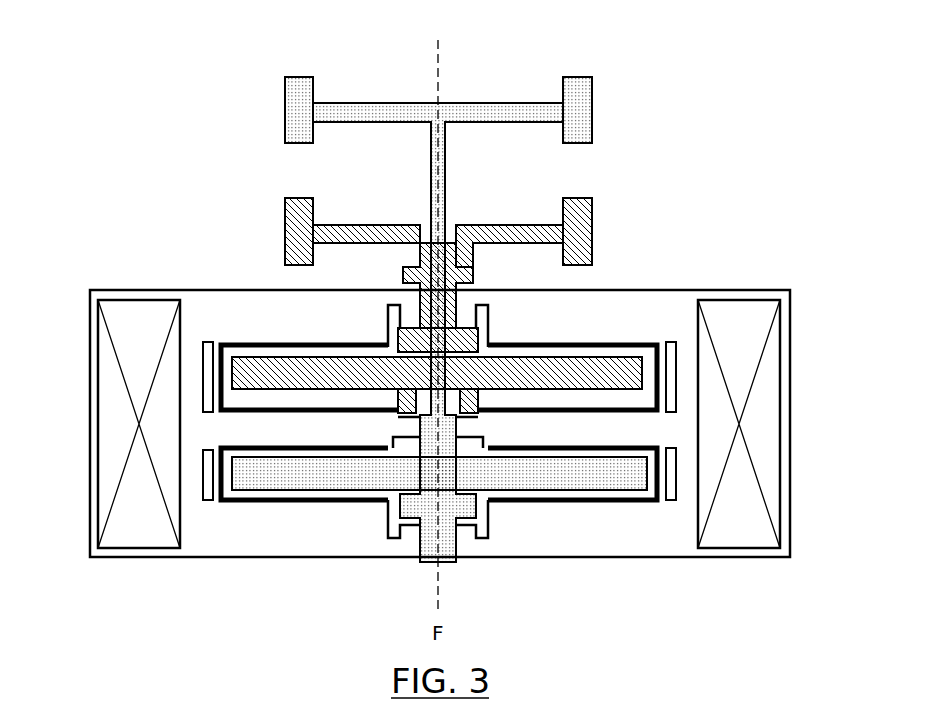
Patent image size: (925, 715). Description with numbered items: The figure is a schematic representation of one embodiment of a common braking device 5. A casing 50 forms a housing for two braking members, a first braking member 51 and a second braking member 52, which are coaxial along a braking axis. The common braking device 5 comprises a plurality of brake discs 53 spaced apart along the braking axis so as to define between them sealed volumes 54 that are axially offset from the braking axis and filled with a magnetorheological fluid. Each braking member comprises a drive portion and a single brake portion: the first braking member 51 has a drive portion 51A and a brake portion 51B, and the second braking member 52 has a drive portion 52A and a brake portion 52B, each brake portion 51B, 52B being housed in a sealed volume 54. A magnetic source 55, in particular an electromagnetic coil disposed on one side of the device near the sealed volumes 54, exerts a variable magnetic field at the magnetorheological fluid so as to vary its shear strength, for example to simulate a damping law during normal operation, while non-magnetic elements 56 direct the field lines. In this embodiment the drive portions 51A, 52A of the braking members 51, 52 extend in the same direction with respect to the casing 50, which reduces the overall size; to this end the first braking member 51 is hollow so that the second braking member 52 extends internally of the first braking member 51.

The common braking device 5 is at (722, 190).
The casing 50 is at (645, 290).
The first braking member 51 is at (396, 275).
The drive portion 51A is at (285, 213).
The brake portion 51B is at (277, 363).
The second braking member 52 is at (418, 312).
The drive portion 52A is at (285, 113).
The brake portion 52B is at (277, 480).
The brake discs 53 is at (582, 328).
The sealed volumes 54 is at (221, 338).
The magnetic source 55 is at (775, 368).
The non-magnetic elements 56 is at (670, 340).